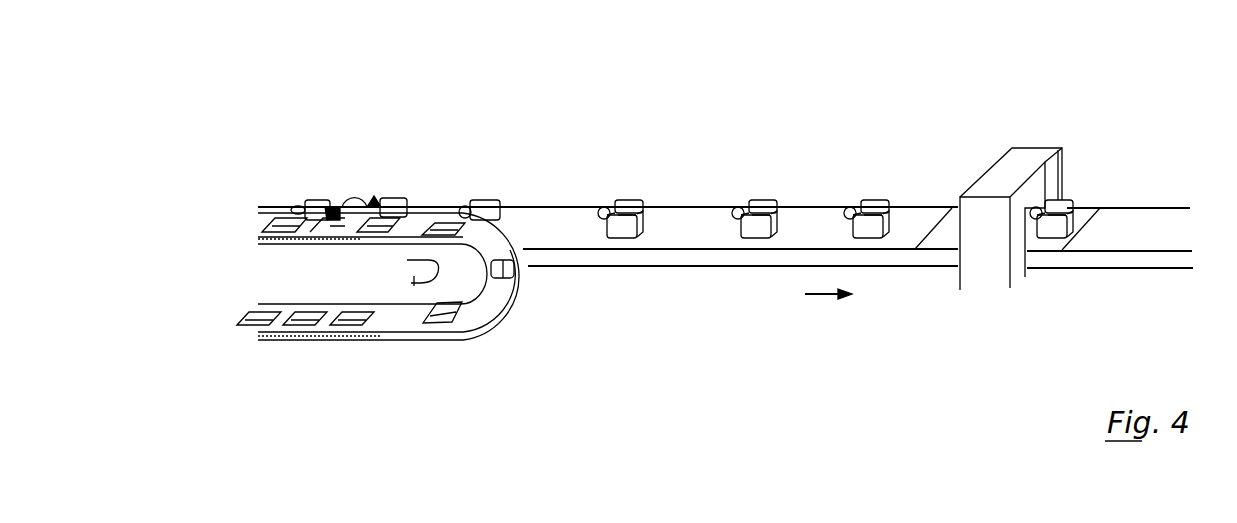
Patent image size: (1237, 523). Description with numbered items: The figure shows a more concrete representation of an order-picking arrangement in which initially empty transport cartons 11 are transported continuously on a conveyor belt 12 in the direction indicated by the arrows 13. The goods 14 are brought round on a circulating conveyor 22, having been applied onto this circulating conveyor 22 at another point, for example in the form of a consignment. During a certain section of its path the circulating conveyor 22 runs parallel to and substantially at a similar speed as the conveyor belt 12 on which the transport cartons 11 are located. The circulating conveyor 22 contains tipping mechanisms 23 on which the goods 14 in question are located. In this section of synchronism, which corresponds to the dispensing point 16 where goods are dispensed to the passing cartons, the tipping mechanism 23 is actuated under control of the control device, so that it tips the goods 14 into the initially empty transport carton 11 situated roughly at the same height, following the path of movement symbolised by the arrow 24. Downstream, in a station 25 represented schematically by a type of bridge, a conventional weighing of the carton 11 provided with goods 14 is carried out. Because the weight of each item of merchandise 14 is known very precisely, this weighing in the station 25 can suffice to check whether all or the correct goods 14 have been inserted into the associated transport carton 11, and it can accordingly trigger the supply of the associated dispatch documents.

The transport carton 11 is at (758, 202).
The conveyor belt 12 is at (813, 223).
The arrows 13 is at (815, 298).
The goods 14 is at (318, 200).
The dispensing point 16 is at (350, 192).
The circulating conveyor 22 is at (482, 312).
The tipping mechanism 23 is at (282, 227).
The arrow 24 is at (365, 185).
The station 25 is at (1037, 127).